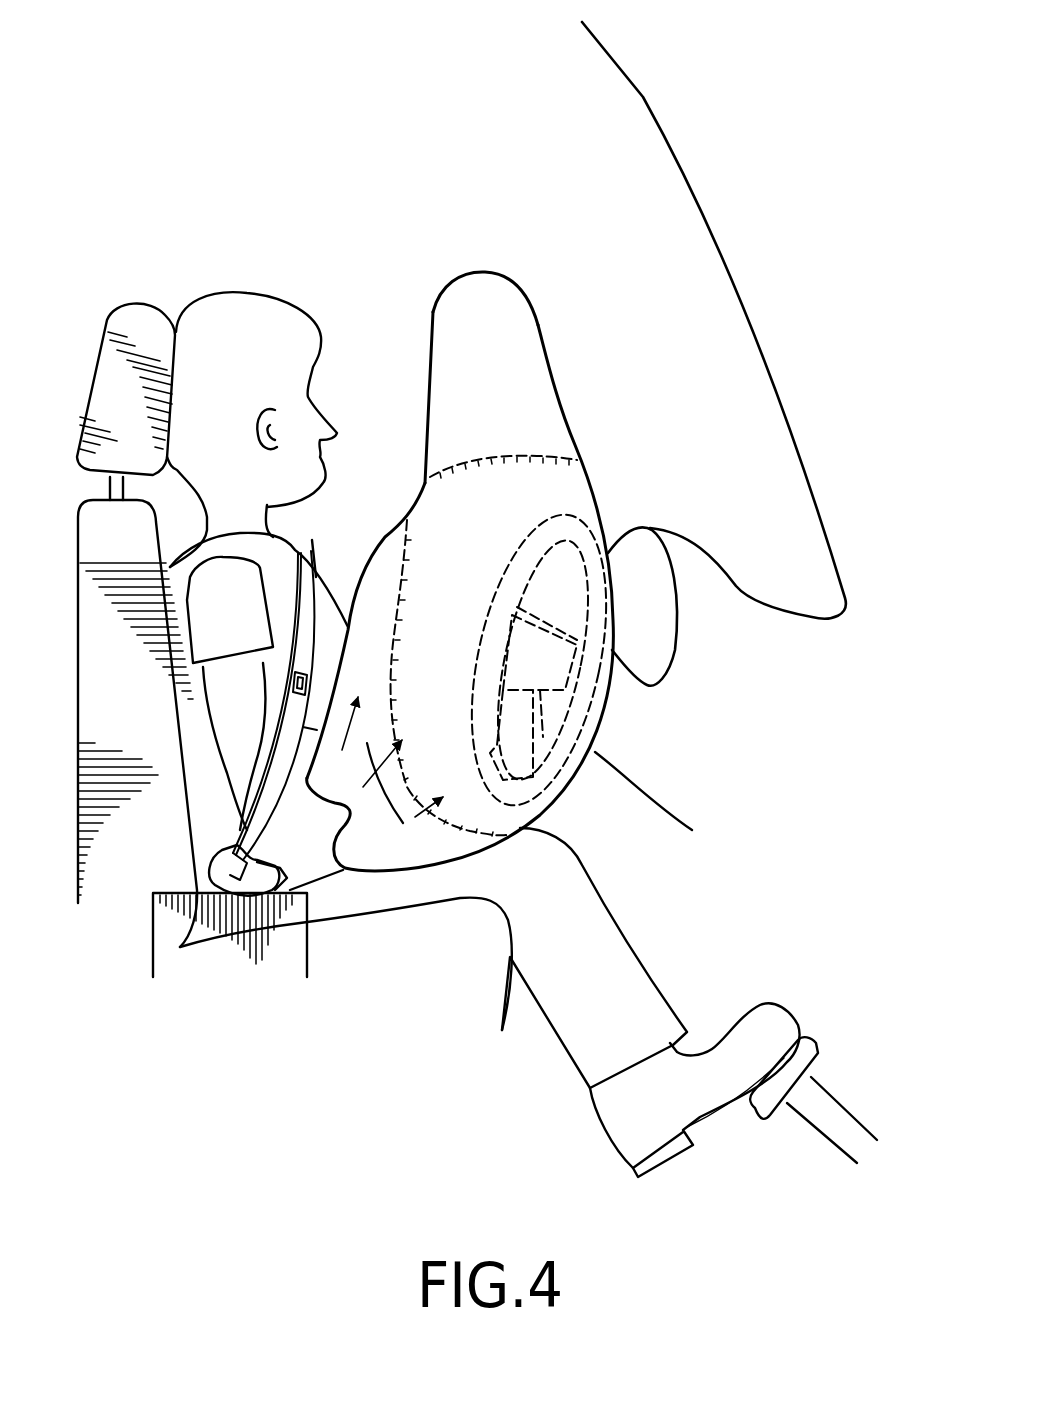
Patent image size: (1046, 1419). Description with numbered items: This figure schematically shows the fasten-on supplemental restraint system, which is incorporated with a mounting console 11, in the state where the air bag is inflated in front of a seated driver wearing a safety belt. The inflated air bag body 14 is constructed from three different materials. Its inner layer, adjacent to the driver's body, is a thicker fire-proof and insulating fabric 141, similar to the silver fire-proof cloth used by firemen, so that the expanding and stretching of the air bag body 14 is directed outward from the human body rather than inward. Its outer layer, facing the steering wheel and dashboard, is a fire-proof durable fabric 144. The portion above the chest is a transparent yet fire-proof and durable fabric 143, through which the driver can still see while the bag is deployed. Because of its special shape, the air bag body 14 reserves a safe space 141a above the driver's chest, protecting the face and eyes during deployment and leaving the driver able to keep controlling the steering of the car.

The air bag body 14 is at (500, 532).
The transparent yet fire-proof and durable fabric 143 is at (498, 297).
The fire-proof durable fabric 144 is at (577, 480).
The thicker fire-proof and insulating fabric 141 is at (350, 590).
The safe space 141a is at (385, 537).
The mounting console 11 is at (277, 873).